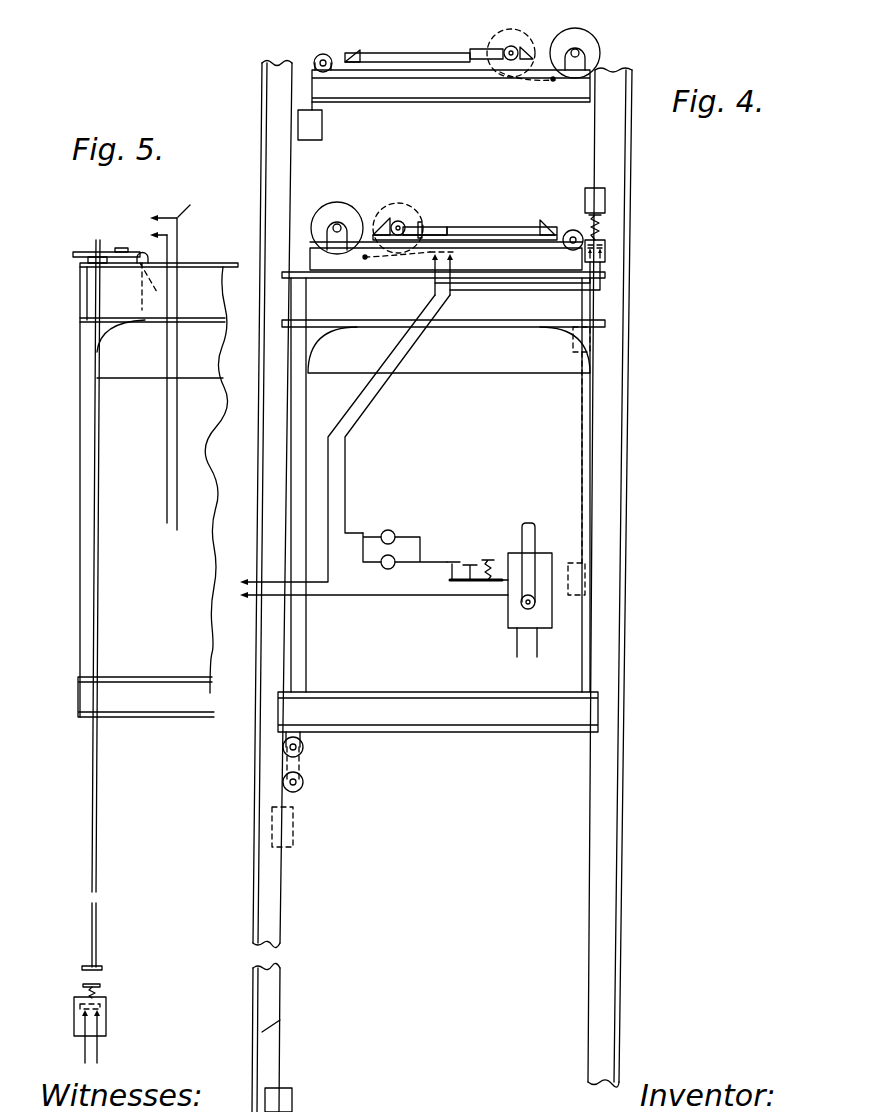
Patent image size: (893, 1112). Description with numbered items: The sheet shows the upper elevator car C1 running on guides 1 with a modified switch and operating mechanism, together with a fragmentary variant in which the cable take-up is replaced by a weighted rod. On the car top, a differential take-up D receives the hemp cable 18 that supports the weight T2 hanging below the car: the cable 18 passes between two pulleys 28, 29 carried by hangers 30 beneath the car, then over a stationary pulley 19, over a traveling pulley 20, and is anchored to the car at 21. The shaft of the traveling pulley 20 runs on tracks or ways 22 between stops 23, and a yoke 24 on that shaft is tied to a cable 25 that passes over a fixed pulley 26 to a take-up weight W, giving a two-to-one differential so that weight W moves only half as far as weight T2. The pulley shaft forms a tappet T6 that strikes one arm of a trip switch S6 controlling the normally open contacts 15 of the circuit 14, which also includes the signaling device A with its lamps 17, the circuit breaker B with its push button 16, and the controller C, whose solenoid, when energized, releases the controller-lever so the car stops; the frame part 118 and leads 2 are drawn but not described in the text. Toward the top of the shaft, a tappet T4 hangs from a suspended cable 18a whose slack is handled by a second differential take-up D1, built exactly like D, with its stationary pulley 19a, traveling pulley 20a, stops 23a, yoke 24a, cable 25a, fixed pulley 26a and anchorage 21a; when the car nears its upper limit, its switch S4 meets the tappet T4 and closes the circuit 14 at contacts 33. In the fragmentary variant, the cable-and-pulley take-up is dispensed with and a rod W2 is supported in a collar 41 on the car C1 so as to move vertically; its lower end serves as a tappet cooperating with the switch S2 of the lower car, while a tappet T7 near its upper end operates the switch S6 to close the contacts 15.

In FIG. 4, the guides 1 is at (596, 938).
In FIG. 4, the rope or cable 18 is at (262, 1032).
In FIG. 4, the suspended cable 18a is at (545, 85).
In FIG. 4, the take-up weight W is at (322, 128).
In FIG. 4, the fixed pulley 26a is at (320, 55).
In FIG. 4, the cable 25a is at (360, 58).
In FIG. 4, the stops 23a is at (356, 50).
In FIG. 4, the differential take-up mechanism D1 is at (415, 52).
In FIG. 4, the yoke 24a is at (475, 50).
In FIG. 4, the traveling pulley 20a is at (510, 44).
In FIG. 4, the stationary pulley 19a is at (590, 48).
In FIG. 4, the cable anchorage point 21a is at (556, 84).
In FIG. 4, the stationary pulley 19 is at (330, 215).
In FIG. 4, the traveling pulley 20 is at (398, 220).
In FIG. 4, the stops 23 is at (380, 222).
In FIG. 4, the tappet (shaft of traveling pulley) T6 is at (408, 222).
In FIG. 4, the trip switch S6 is at (420, 238).
In FIG. 5, the trip switch S6 is at (80, 253).
In FIG. 4, the yoke 24 is at (440, 230).
In FIG. 4, the differential take-up D is at (489, 222).
In FIG. 4, the cable 25 is at (505, 232).
In FIG. 4, the fixed pulley 26 is at (573, 230).
In FIG. 4, the anchorage point 21 is at (365, 260).
In FIG. 4, the tappet T4 is at (605, 205).
In FIG. 4, the switch S4 is at (605, 230).
In FIG. 4, the contacts 33 is at (605, 256).
In FIG. 4, the tracks or ways 22 is at (443, 284).
In FIG. 4, the normally open contacts 15 is at (455, 258).
In FIG. 5, the normally open contacts 15 is at (58, 1018).
In FIG. 4, the elevator car C1 is at (438, 505).
In FIG. 5, the elevator car C1 is at (158, 490).
In FIG. 4, the car frame 118 is at (312, 362).
In FIG. 4, the circuit 14 is at (372, 404).
In FIG. 5, the circuit 14 is at (163, 410).
In FIG. 4, the lamps 17 is at (392, 533).
In FIG. 4, the alarm or signaling device A is at (378, 516).
In FIG. 4, the push button 16 is at (470, 563).
In FIG. 4, the circuit breaker B is at (488, 555).
In FIG. 4, the controller C is at (519, 606).
In FIG. 4, the controller leads 2 is at (527, 655).
In FIG. 4, the pulley 28 is at (304, 747).
In FIG. 4, the hangers 30 is at (300, 766).
In FIG. 4, the pulley 29 is at (304, 785).
In FIG. 4, the weight (tappet) T2 is at (295, 828).
In FIG. 5, the tappet T7 is at (98, 258).
In FIG. 5, the rod weight W2 is at (96, 820).
In FIG. 5, the collar 41 is at (85, 264).
In FIG. 5, the switch S2 is at (100, 986).